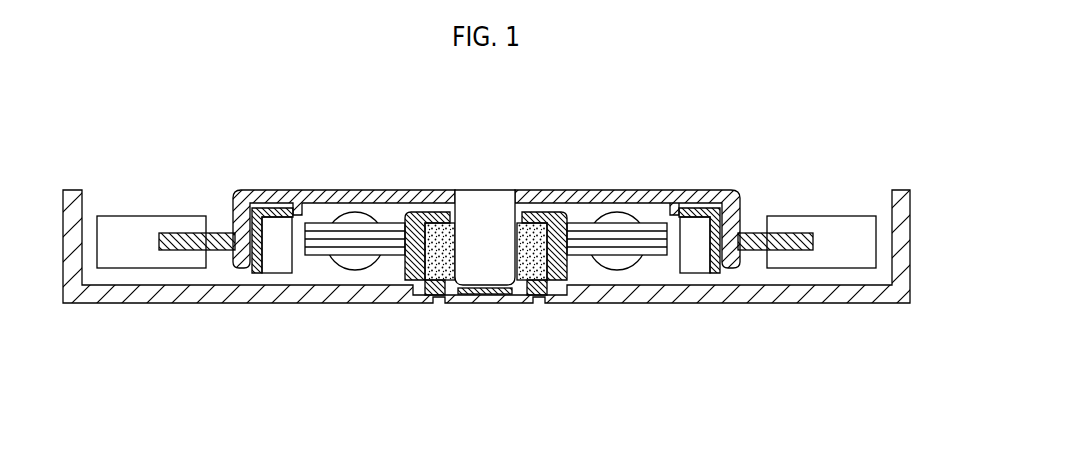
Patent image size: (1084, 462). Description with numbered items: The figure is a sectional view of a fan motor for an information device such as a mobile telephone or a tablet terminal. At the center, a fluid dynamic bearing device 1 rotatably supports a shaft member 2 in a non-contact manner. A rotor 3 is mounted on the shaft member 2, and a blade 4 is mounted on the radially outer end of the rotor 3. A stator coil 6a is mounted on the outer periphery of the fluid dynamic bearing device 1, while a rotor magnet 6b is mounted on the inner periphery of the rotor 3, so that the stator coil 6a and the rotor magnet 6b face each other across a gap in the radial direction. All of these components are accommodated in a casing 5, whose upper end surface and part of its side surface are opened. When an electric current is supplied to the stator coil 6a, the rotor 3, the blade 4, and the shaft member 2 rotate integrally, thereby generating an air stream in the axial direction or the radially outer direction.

The fluid dynamic bearing device 1 is at (540, 212).
The shaft member 2 is at (481, 200).
The rotor 3 is at (622, 196).
The blade 4 is at (133, 228).
The casing 5 is at (362, 293).
The stator coil 6a is at (655, 244).
The rotor magnet 6b is at (275, 258).